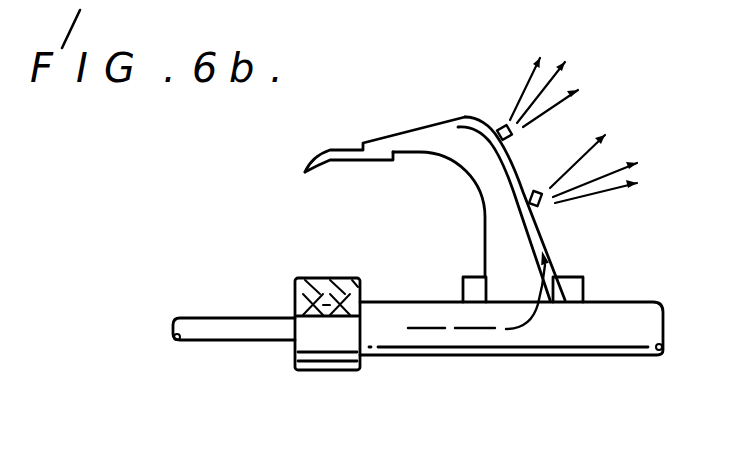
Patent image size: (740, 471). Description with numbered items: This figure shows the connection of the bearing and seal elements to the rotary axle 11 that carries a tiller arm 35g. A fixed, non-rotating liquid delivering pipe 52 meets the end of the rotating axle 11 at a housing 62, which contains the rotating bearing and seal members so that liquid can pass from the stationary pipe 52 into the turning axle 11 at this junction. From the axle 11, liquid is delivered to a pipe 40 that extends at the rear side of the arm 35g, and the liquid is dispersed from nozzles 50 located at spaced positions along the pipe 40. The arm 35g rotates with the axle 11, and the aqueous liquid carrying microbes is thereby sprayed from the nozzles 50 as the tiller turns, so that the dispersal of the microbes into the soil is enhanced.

The rotary axle 11 is at (510, 347).
The arm 35g is at (495, 212).
The pipe 40 is at (521, 172).
The nozzle 50 is at (500, 124).
The liquid delivering pipe 52 is at (193, 320).
The housing 62 is at (310, 357).